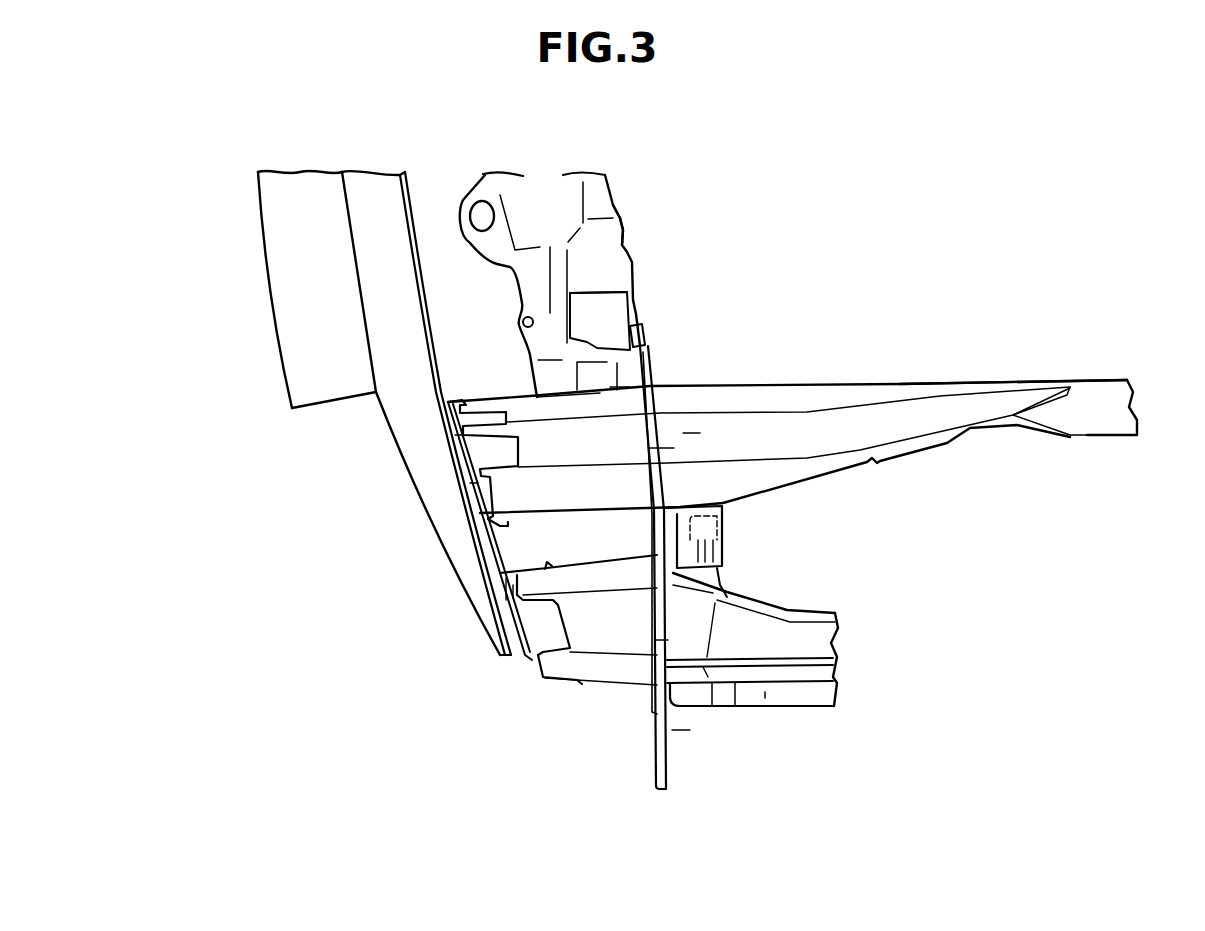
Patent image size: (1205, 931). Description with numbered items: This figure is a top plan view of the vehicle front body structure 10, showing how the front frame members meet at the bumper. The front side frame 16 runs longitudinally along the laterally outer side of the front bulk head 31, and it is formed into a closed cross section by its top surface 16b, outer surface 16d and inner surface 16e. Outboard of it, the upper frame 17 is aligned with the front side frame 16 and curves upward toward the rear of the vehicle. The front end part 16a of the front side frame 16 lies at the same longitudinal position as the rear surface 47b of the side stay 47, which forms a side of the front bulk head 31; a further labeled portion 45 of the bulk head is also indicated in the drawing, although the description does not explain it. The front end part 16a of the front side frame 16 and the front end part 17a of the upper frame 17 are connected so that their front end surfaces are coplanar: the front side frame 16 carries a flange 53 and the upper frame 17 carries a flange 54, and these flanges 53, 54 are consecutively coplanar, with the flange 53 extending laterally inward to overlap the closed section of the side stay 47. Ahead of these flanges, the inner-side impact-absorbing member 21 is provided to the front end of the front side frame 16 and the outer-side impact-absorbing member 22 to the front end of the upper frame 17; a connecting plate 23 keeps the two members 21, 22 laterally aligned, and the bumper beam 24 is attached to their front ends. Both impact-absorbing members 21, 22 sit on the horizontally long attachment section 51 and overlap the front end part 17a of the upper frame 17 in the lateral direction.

The vehicle front body structure 10 is at (140, 116).
The front side frame 16 is at (904, 386).
The front end part 16a is at (657, 453).
The top surface 16b is at (845, 424).
The outer surface 16d is at (740, 500).
The inner surface 16e is at (948, 385).
The upper frame 17 is at (817, 608).
The front end part 17a is at (678, 637).
The inner-side impact-absorbing member 21 is at (535, 448).
The outer-side impact-absorbing member 22 is at (582, 615).
The connecting plate 23 is at (648, 622).
The bumper beam 24 is at (397, 447).
The front bulk head 31 is at (592, 196).
The bracket step portion 45 is at (620, 228).
The side stay 47 is at (624, 373).
The rear surface 47b is at (645, 340).
The attachment section 51 is at (950, 505).
The flange 53 is at (663, 432).
The flange 54 is at (668, 730).